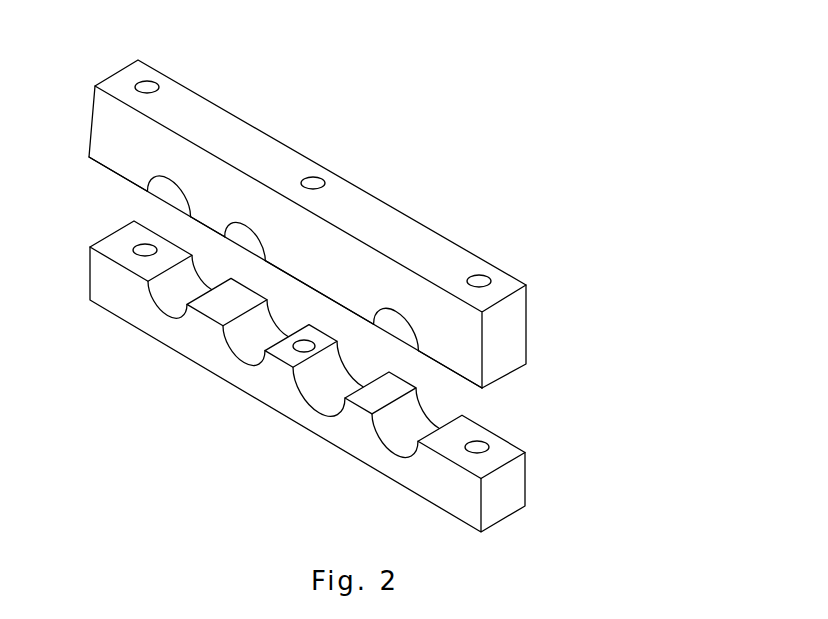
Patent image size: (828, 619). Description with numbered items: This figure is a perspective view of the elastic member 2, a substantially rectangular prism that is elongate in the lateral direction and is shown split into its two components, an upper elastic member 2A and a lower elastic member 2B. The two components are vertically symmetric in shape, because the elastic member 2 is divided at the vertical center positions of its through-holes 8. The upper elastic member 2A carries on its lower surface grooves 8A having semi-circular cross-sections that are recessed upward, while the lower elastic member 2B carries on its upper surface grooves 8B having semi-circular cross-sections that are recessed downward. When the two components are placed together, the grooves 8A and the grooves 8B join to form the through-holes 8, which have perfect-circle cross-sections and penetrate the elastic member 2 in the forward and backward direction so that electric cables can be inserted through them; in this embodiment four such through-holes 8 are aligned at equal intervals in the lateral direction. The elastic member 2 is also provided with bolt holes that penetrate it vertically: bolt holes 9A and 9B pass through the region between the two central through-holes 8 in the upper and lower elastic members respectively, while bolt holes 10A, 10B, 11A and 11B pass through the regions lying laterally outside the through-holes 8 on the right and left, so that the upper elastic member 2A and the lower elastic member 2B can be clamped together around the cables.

The elastic member 2 is at (662, 320).
The upper elastic member 2A is at (367, 204).
The lower elastic member 2B is at (361, 358).
The through-holes 8 is at (398, 450).
The grooves 8A is at (252, 233).
The grooves 8B is at (250, 320).
The bolt hole 9A is at (316, 178).
The bolt hole 9B is at (306, 342).
The bolt hole 10A is at (482, 276).
The bolt hole 10B is at (483, 442).
The bolt hole 11A is at (149, 81).
The bolt hole 11B is at (141, 249).